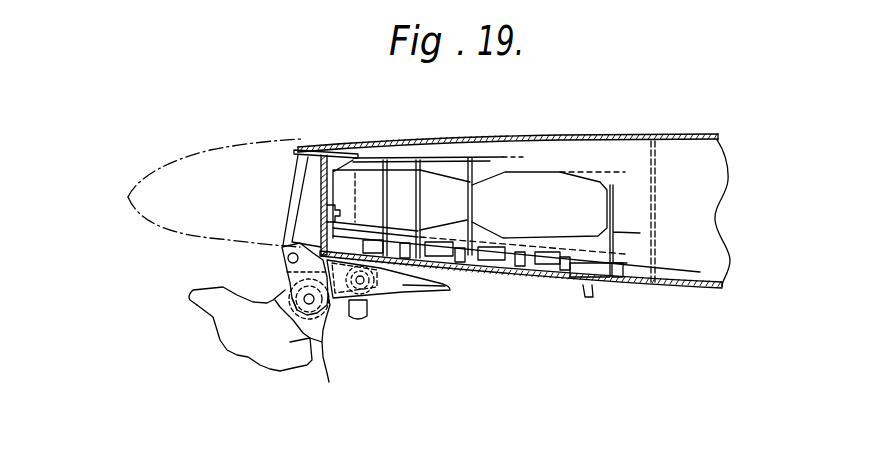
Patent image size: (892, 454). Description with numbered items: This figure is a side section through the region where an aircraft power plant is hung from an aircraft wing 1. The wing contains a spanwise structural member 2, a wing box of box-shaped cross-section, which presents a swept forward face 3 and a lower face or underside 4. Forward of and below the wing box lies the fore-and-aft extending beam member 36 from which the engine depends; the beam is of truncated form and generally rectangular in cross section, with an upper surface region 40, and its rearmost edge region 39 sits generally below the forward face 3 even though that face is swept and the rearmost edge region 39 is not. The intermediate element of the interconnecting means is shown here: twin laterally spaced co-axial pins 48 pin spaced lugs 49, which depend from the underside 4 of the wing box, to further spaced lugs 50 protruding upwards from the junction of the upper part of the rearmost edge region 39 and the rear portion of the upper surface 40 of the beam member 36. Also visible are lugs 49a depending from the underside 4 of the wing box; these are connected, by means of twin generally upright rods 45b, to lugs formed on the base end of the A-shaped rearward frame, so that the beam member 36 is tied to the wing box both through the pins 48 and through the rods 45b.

The aircraft wing 1 is at (188, 158).
The spanwise structural member 2 is at (600, 130).
The forward face 3 is at (320, 197).
The lower face or underside 4 is at (655, 285).
The beam member 36 is at (233, 353).
The rearmost edge region 39 is at (325, 345).
The upper surface region 40 is at (190, 298).
The upright rods 45b is at (366, 317).
The co-axial pins 48 is at (311, 301).
The spaced lugs 49 is at (280, 270).
The lugs 49a is at (403, 285).
The spaced lugs 50 is at (288, 295).